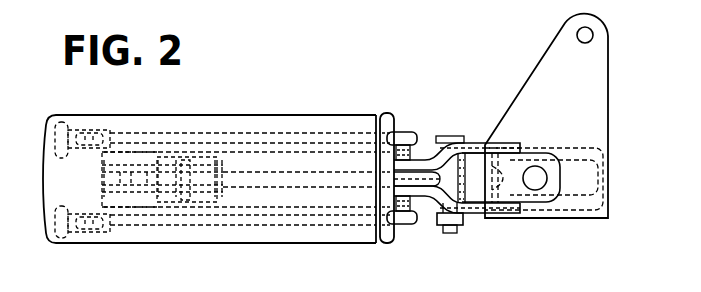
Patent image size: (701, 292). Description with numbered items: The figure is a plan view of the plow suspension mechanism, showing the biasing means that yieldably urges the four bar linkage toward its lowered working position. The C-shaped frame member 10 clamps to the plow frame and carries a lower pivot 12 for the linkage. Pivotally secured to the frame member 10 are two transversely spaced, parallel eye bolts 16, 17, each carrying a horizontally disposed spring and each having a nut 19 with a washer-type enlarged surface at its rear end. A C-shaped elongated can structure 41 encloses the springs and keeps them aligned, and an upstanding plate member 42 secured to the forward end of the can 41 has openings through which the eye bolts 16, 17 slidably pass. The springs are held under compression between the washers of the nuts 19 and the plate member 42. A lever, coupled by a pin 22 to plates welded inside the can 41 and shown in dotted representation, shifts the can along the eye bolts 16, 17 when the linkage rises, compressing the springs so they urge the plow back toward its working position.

The C-shaped frame member 10 is at (537, 72).
The lower pivot 12 is at (452, 234).
The eye bolt 16 is at (418, 134).
The eye bolt 17 is at (413, 224).
The nut 19 is at (61, 118).
The pin 22 is at (186, 205).
The can structure 41 is at (297, 115).
The plate member 42 is at (392, 244).